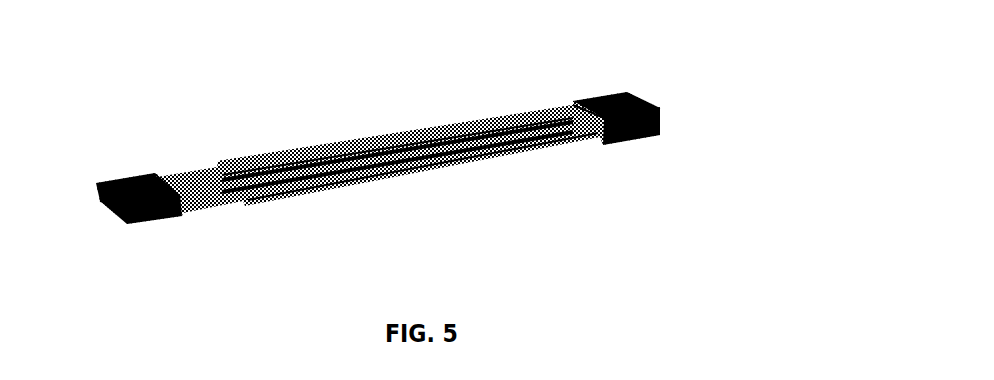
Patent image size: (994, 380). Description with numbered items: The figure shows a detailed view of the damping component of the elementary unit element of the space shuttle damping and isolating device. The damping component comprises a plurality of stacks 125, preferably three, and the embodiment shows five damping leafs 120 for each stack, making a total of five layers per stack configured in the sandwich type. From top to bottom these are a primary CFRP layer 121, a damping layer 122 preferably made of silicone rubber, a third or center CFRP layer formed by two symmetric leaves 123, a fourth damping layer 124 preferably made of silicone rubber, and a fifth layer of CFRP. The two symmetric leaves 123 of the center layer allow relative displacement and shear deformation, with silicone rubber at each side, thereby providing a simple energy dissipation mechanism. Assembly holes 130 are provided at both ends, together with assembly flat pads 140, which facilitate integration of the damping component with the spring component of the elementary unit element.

The damping leaf 120 is at (232, 158).
The primary CFRP layer 121 is at (490, 115).
The damping layer 122 is at (533, 143).
The symmetric leaf 123 is at (307, 197).
The fourth damping layer 124 is at (498, 162).
The stack 125 is at (448, 170).
The assembly hole 130 is at (123, 177).
The assembly flat pad 140 is at (102, 183).